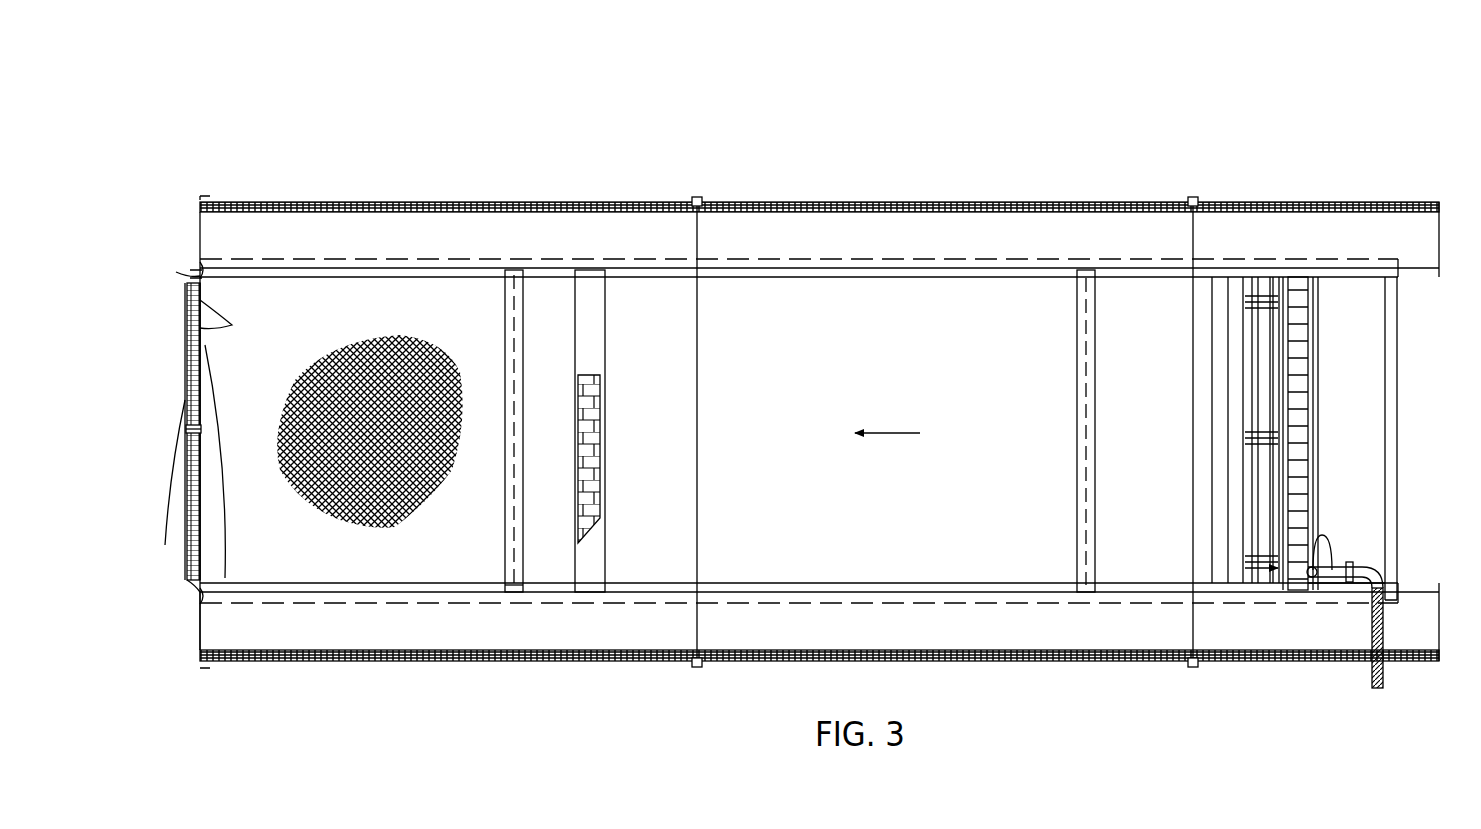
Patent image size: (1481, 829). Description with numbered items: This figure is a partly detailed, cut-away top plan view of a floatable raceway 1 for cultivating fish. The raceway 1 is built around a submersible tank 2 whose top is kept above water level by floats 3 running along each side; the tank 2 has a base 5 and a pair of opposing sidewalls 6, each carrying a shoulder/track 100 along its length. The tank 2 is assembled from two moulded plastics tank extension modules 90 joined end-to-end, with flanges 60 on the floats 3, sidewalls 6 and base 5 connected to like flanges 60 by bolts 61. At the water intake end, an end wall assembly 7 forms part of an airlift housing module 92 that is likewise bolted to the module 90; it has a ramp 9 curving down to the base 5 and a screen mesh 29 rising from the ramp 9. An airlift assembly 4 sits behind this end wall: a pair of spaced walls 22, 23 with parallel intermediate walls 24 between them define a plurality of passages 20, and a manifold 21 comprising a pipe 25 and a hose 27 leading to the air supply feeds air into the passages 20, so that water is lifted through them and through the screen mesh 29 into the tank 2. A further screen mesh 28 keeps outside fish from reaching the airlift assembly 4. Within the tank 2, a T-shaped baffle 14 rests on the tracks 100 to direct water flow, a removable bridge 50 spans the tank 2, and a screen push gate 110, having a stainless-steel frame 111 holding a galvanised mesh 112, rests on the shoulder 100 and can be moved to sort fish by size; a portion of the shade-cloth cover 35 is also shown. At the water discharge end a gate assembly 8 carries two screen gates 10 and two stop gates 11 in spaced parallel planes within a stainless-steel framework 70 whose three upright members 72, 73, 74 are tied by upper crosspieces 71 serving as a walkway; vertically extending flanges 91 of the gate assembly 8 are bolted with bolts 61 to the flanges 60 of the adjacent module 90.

The floatable raceway 1 is at (470, 718).
The submersible tank 2 is at (773, 381).
The floats 3 is at (466, 252).
The airlift assembly 4 is at (1290, 600).
The base 5 is at (896, 544).
The sidewalls 6 is at (652, 212).
The end wall assembly 7 is at (1205, 570).
The gate assembly 8 is at (186, 285).
The ramp 9 is at (1212, 510).
The screen gates 10 is at (188, 536).
The stop gates 11 is at (200, 600).
The baffle 14 is at (1078, 290).
The passages 20 is at (1318, 350).
The manifold 21 is at (1320, 425).
The spaced wall 22 is at (1258, 585).
The spaced wall 23 is at (1300, 600).
The intermediate walls 24 is at (1300, 522).
The pipe 25 is at (1316, 350).
The hose 27 is at (1372, 682).
The screen mesh 28 is at (1390, 541).
The screen mesh 29 is at (1275, 275).
The cover 35 is at (368, 338).
The removable bridge 50 is at (588, 300).
The flanges 60 is at (203, 198).
The bolts 61 is at (203, 266).
The framework 70 is at (182, 290).
The upper crosspieces 71 is at (222, 322).
The upright member 72 is at (194, 275).
The upright member 73 is at (188, 428).
The upright member 74 is at (192, 562).
The tank extension module 90 is at (348, 664).
The flanges 91 is at (203, 278).
The airlift housing module 92 is at (1410, 664).
The shoulder/track 100 is at (952, 268).
The screen push gate 110 is at (537, 270).
The frame 111 is at (514, 320).
The mesh 112 is at (518, 555).